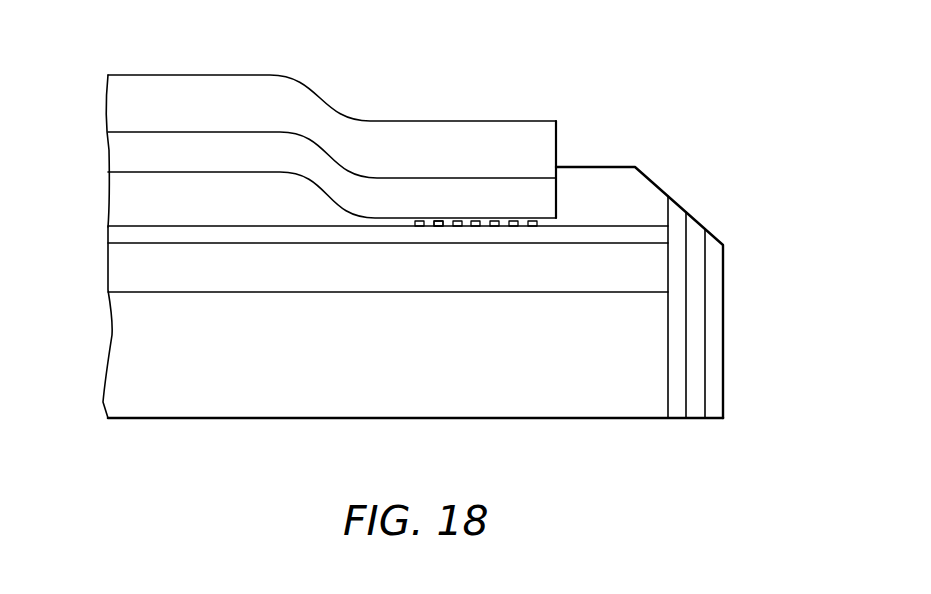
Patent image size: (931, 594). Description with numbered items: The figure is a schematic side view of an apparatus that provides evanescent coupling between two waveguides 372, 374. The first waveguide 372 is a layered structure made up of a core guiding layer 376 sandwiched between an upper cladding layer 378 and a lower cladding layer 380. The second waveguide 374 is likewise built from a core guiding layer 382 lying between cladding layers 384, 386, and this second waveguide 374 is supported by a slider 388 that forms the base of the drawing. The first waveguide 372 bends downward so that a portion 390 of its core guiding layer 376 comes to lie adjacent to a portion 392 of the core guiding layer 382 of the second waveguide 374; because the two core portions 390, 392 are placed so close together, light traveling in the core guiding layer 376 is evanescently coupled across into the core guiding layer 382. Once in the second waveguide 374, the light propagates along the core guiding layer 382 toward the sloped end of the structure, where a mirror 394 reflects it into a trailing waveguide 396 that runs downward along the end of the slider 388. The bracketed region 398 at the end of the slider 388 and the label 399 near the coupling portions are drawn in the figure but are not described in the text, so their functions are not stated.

The waveguide 372 is at (88, 75).
The waveguide 374 is at (604, 146).
The core guiding layer 376 is at (298, 150).
The cladding layer 378 is at (217, 93).
The cladding layer 380 is at (157, 210).
The core guiding layer 382 is at (605, 235).
The cladding layer 384 is at (643, 190).
The cladding layer 386 is at (255, 278).
The slider 388 is at (408, 402).
The portion of core guiding layer 390 is at (457, 217).
The portion of core guiding layer 392 is at (490, 235).
The mirror 394 is at (697, 220).
The trailing waveguide 396 is at (697, 362).
The end layer stack 398 is at (723, 428).
The contact pad 399 is at (437, 227).